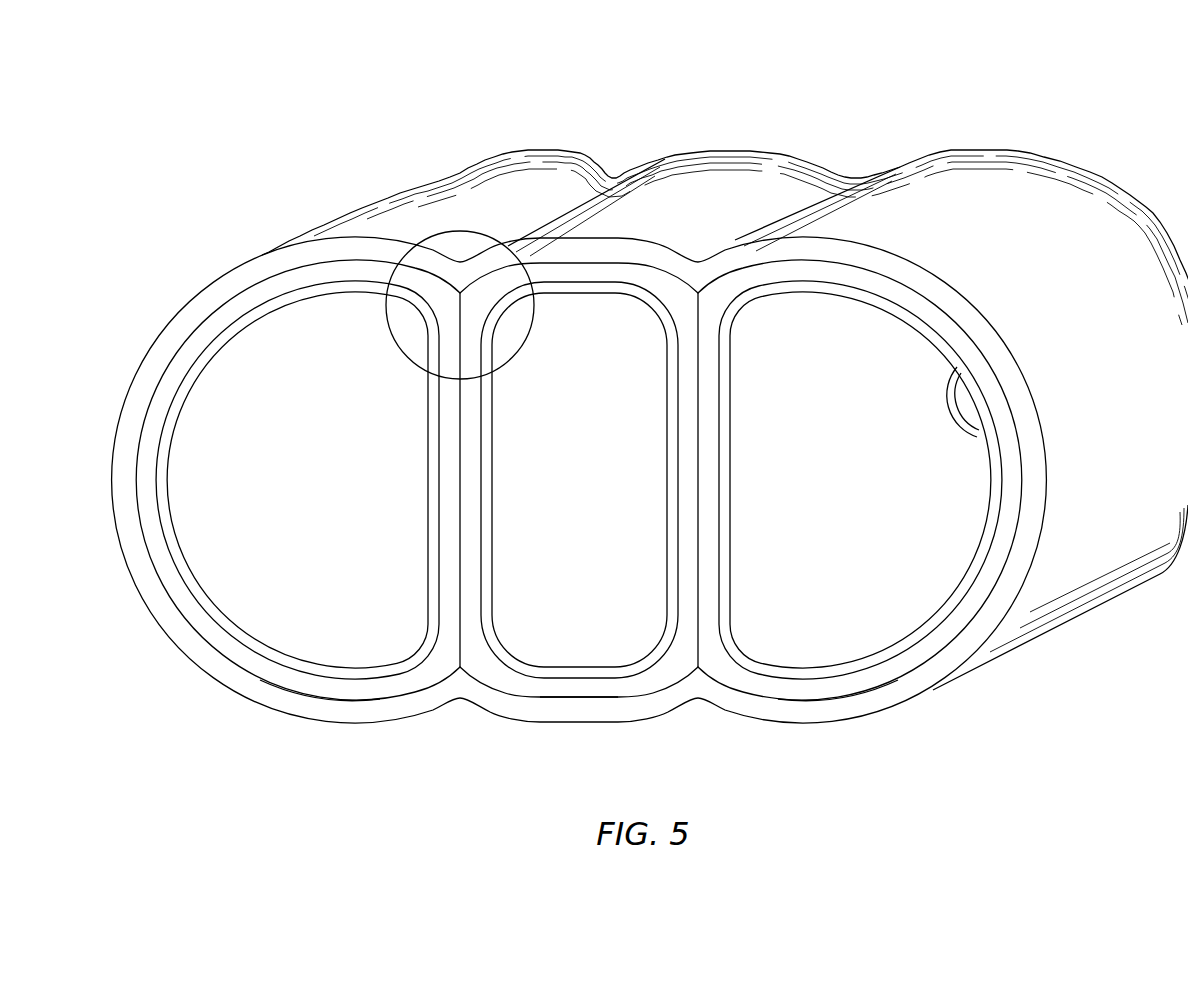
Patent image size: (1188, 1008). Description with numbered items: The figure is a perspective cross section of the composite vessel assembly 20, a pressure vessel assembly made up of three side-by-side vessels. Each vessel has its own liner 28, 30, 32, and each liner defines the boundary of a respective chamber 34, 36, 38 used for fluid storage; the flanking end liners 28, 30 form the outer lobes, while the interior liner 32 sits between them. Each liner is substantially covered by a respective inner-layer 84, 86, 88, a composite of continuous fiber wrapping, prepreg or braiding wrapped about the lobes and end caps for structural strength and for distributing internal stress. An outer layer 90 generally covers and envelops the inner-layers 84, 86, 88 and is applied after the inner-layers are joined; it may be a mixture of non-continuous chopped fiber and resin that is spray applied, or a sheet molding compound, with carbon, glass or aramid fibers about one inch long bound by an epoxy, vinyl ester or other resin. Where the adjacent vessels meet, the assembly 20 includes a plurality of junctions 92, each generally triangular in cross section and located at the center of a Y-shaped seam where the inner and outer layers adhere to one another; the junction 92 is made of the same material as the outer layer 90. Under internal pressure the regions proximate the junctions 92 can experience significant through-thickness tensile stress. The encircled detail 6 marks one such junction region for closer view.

The composite vessel assembly 20 is at (1036, 127).
The liner 28 is at (273, 652).
The liner 30 is at (768, 655).
The interior liner 32 is at (520, 652).
The chamber 34 is at (320, 562).
The chamber 36 is at (853, 584).
The chamber 38 is at (590, 572).
The inner-layer 84 is at (295, 680).
The inner-layer 86 is at (853, 688).
The inner-layer 88 is at (593, 688).
The outer layer 90 is at (367, 720).
The junction 92 is at (453, 296).
The detail view circle 6 is at (512, 357).